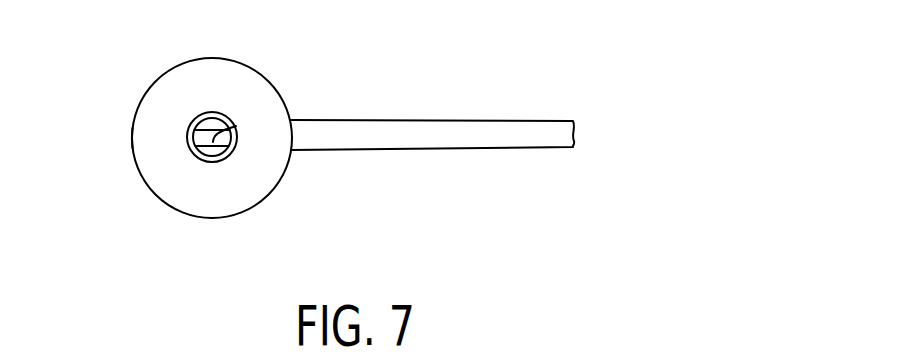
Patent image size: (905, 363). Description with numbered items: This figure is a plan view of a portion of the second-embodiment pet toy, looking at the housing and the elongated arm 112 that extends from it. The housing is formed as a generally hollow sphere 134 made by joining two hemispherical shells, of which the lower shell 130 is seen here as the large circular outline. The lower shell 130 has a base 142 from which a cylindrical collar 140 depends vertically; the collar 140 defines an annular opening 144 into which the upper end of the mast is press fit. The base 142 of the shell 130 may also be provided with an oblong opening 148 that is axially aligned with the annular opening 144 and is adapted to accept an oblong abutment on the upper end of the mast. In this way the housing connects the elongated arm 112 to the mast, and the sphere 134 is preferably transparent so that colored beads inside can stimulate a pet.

The elongated arm 112 is at (443, 119).
The lower shell 130 is at (170, 88).
The hollow sphere 134 is at (132, 128).
The cylindrical collar 140 is at (212, 112).
The base of the lower shell 142 is at (225, 159).
The annular opening 144 is at (221, 160).
The oblong opening 148 is at (236, 126).